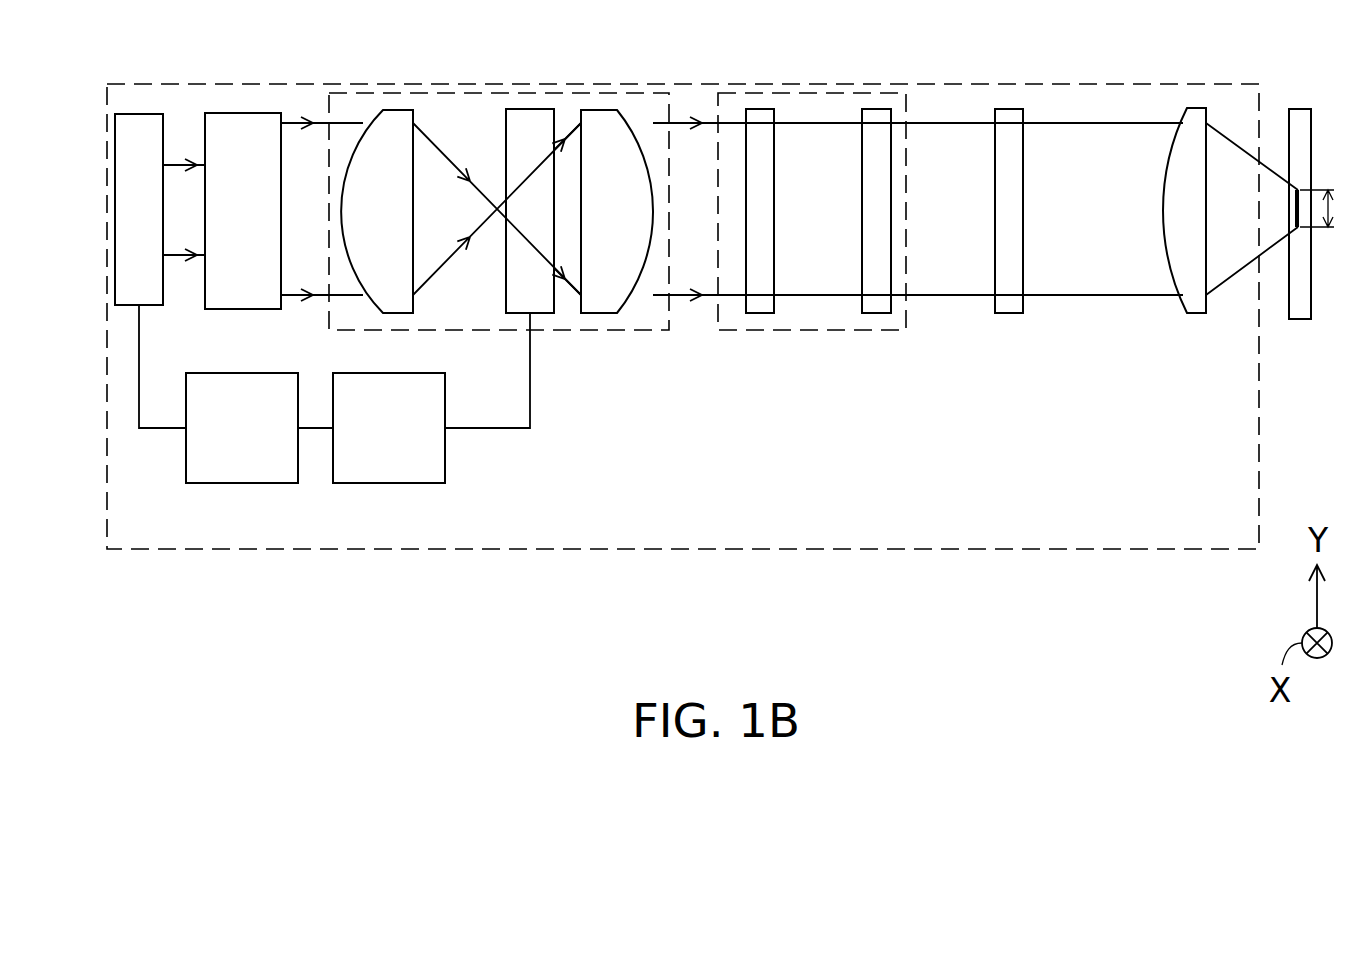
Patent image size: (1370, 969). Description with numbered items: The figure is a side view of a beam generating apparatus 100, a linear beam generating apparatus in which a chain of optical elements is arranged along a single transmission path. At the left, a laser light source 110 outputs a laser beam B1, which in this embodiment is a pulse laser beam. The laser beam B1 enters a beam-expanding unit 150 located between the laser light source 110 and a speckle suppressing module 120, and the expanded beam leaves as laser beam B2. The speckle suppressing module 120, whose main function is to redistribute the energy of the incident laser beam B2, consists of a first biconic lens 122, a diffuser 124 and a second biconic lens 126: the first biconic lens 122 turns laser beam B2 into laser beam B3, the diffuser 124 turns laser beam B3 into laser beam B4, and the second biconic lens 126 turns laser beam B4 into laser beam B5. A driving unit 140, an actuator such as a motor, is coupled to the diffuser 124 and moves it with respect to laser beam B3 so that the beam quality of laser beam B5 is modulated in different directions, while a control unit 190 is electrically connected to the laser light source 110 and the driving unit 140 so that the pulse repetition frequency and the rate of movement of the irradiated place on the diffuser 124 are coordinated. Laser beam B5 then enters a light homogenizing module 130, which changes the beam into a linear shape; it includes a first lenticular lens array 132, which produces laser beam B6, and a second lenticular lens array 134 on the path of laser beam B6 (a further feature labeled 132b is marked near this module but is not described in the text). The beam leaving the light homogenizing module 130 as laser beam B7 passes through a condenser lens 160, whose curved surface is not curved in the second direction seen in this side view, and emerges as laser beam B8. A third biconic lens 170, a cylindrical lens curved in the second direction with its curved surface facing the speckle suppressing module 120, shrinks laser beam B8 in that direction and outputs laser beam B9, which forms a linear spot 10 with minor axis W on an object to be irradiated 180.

The beam generating apparatus 100 is at (353, 549).
The laser light source 110 is at (132, 138).
The beam-expanding unit 150 is at (232, 140).
The speckle suppressing module 120 is at (620, 330).
The first biconic lens 122 is at (370, 130).
The diffuser 124 is at (515, 127).
The second biconic lens 126 is at (620, 133).
The light homogenizing module 130 is at (810, 330).
The first lenticular lens array 132 is at (757, 133).
The surface of first optical plate 132b is at (896, 382).
The second lenticular lens array 134 is at (872, 130).
The driving unit 140 is at (388, 483).
The condenser lens 160 is at (1007, 138).
The third biconic lens 170 is at (1197, 122).
The object to be irradiated 180 is at (1297, 300).
The linear spot 10 is at (1312, 225).
The minor axis W is at (1328, 210).
The control unit 190 is at (242, 483).
The laser beam B1 is at (173, 160).
The laser beam B2 is at (290, 122).
The laser beam B3 is at (433, 138).
The laser beam B4 is at (577, 130).
The laser beam B5 is at (682, 120).
The laser beam B6 is at (817, 120).
The laser beam B7 is at (948, 120).
The laser beam B8 is at (1097, 120).
The laser beam B9 is at (1222, 132).